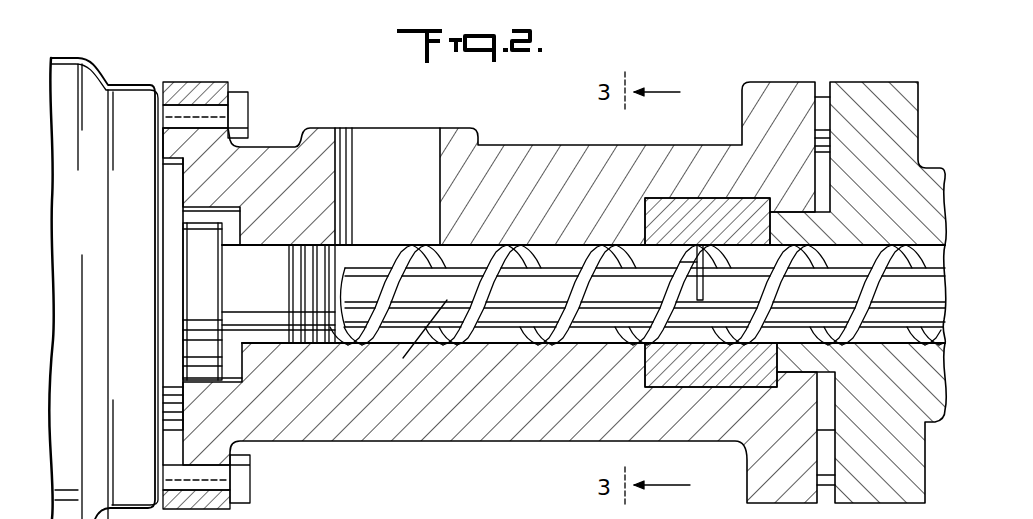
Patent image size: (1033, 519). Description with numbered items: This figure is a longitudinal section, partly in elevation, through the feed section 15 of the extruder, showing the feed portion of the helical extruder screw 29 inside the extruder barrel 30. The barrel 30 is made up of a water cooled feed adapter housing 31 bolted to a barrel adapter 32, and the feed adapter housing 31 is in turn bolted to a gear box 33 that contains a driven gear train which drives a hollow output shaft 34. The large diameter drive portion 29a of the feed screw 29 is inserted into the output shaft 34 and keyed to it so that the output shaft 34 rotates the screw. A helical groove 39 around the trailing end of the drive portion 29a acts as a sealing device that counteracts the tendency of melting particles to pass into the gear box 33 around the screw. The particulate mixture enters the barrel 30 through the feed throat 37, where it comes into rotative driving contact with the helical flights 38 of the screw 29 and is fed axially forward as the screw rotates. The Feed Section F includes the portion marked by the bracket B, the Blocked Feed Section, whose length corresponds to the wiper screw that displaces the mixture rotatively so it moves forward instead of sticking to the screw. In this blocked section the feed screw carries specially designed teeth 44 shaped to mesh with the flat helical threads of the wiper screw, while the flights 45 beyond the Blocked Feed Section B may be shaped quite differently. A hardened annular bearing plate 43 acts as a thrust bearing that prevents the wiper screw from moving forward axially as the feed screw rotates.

The feed section 15 is at (322, 128).
The helical extruder screw 29 is at (637, 281).
The drive portion 29a is at (260, 340).
The extruder barrel 30 is at (465, 398).
The feed adapter housing 31 is at (683, 160).
The barrel adapter 32 is at (882, 197).
The gear box 33 is at (133, 82).
The hollow output shaft 34 is at (197, 275).
The throat 37 is at (347, 155).
The helical flights 38 is at (603, 243).
The helical groove 39 is at (302, 273).
The annular bearing plate 43 is at (748, 208).
The teeth 44 is at (486, 248).
The flights 45 is at (888, 328).
The Blocked Feed Section B is at (424, 344).
The Feed Section F is at (740, 267).